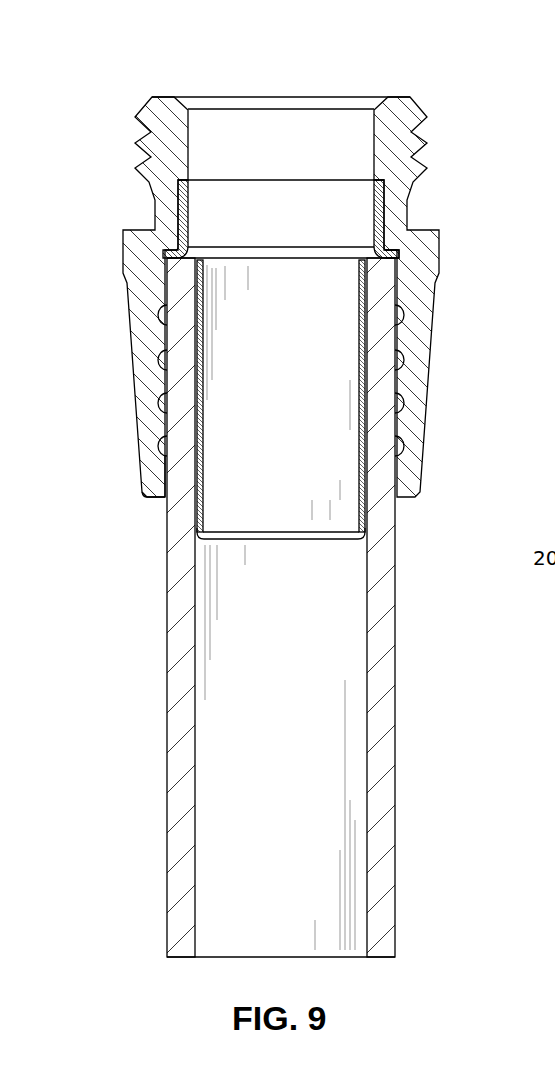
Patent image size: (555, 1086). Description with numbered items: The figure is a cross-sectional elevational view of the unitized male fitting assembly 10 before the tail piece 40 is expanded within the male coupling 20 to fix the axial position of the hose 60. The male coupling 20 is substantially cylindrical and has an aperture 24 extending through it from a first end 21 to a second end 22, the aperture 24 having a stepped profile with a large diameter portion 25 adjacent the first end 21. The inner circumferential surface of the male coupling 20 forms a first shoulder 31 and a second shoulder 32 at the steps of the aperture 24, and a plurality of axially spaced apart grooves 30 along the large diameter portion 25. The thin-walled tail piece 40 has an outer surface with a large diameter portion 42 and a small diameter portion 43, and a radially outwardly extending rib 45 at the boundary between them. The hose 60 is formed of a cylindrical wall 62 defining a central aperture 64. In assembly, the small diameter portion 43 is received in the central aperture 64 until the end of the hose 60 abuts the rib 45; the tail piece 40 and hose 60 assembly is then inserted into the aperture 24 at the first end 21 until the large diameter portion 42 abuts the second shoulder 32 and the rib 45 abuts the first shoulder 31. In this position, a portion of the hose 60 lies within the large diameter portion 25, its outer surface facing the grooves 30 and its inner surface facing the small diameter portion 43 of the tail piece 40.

The unitized male fitting assembly 10 is at (442, 72).
The male coupling 20 is at (112, 234).
The first end 21 is at (145, 498).
The second end 22 is at (160, 97).
The aperture 24 is at (295, 151).
The large diameter portion 25 is at (165, 462).
The grooves 30 is at (162, 397).
The first shoulder 31 is at (168, 262).
The second shoulder 32 is at (183, 190).
The tail piece 40 is at (378, 421).
The large diameter portion 42 is at (392, 208).
The small diameter portion 43 is at (368, 510).
The rib 45 is at (397, 254).
The hose 60 is at (408, 608).
The cylindrical wall 62 is at (388, 672).
The central aperture 64 is at (293, 713).